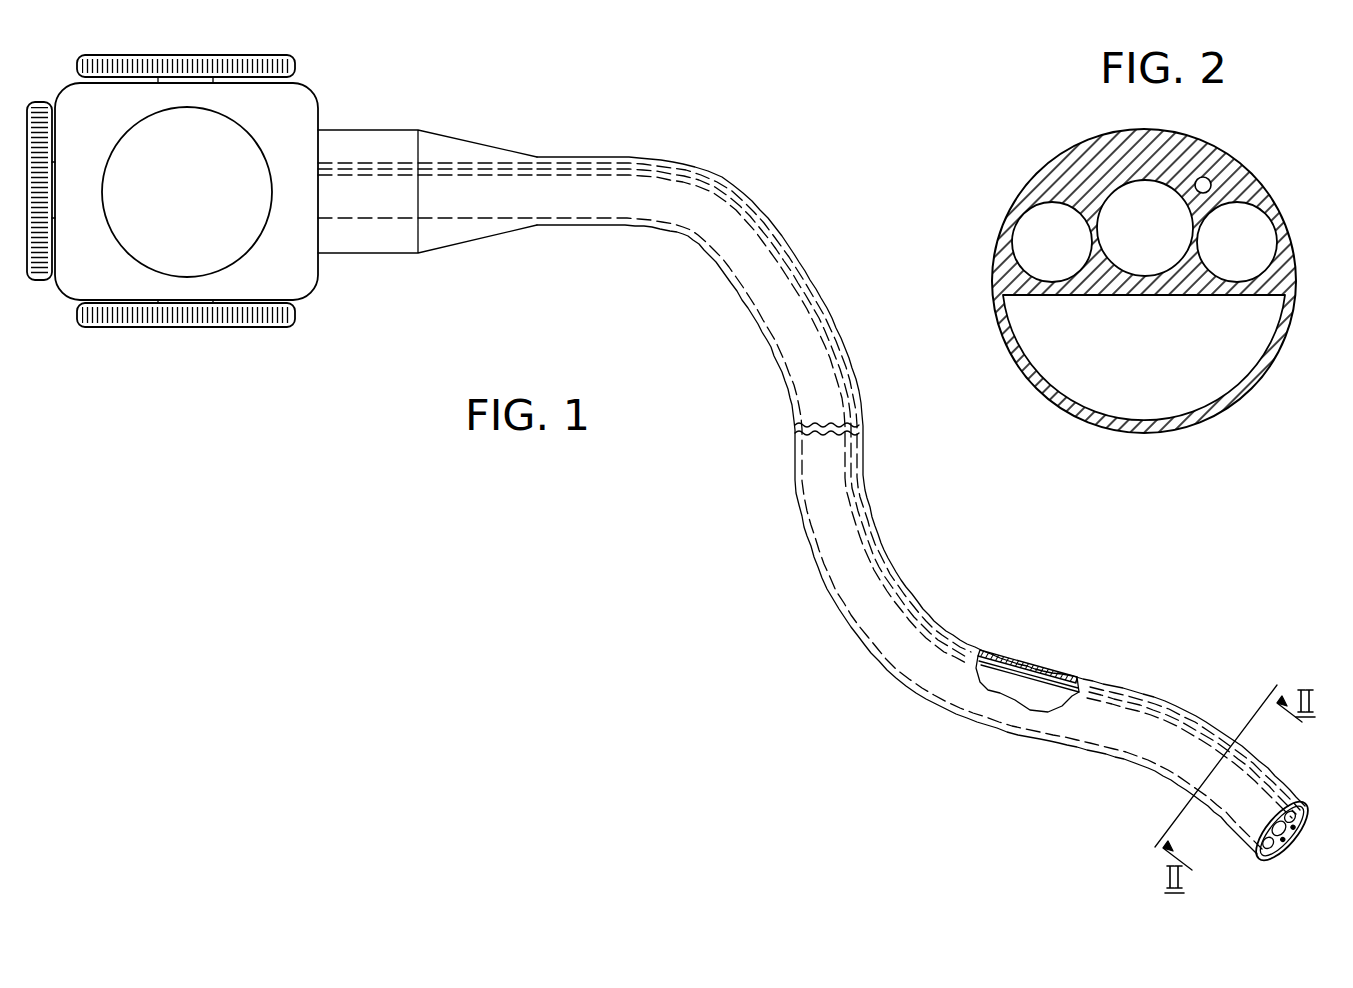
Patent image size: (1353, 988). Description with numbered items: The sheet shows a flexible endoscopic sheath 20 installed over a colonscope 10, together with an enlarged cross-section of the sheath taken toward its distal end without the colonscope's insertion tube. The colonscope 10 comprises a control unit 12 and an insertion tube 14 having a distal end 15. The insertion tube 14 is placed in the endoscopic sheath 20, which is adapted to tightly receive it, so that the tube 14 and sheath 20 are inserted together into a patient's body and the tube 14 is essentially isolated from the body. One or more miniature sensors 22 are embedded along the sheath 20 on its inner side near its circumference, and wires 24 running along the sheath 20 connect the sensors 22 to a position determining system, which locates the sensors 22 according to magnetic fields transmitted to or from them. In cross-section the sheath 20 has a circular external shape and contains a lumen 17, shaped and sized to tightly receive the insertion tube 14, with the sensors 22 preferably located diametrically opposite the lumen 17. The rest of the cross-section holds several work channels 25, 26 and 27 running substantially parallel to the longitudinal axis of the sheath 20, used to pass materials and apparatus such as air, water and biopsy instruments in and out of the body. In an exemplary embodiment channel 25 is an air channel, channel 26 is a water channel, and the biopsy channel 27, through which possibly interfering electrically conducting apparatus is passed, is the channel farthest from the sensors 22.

In FIG. 1, the colonscope 10 is at (824, 247).
In FIG. 1, the control unit 12 is at (313, 293).
In FIG. 1, the insertion tube 14 is at (684, 236).
In FIG. 1, the distal end 15 is at (1256, 852).
In FIG. 2, the lumen 17 is at (1151, 367).
In FIG. 1, the endoscopic sheath 20 is at (503, 232).
In FIG. 2, the endoscopic sheath 20 is at (1005, 345).
In FIG. 1, the sensors 22 is at (997, 657).
In FIG. 2, the sensors 22 is at (1207, 178).
In FIG. 1, the wires 24 is at (1024, 675).
In FIG. 2, the work channel 25 is at (1028, 212).
In FIG. 2, the work channel 26 is at (1275, 222).
In FIG. 2, the biopsy channel 27 is at (1130, 190).